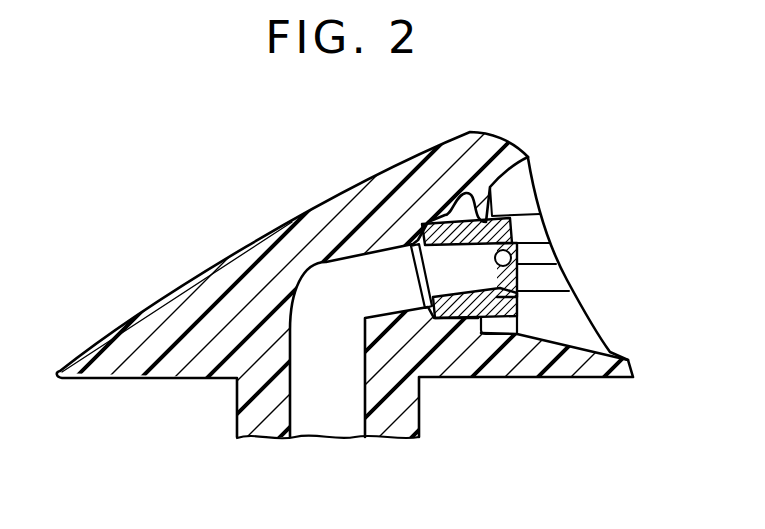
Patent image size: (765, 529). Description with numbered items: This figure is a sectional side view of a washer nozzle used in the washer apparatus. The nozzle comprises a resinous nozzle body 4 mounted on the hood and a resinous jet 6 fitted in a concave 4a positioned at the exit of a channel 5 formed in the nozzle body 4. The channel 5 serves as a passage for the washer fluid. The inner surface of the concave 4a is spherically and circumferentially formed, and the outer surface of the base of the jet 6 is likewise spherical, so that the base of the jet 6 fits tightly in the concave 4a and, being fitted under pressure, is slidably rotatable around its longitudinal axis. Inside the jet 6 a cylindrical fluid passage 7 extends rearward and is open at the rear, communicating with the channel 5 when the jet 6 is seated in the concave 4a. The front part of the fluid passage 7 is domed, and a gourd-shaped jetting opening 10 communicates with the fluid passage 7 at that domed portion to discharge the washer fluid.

The nozzle body 4 is at (283, 222).
The concave 4a is at (463, 314).
The channel 5 is at (291, 416).
The jet 6 is at (523, 211).
The fluid passage 7 is at (406, 270).
The jetting opening 10 is at (512, 257).